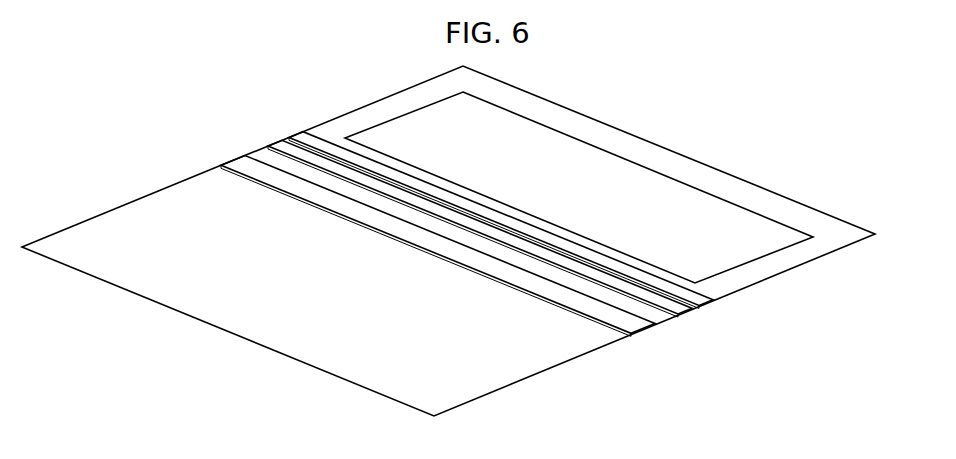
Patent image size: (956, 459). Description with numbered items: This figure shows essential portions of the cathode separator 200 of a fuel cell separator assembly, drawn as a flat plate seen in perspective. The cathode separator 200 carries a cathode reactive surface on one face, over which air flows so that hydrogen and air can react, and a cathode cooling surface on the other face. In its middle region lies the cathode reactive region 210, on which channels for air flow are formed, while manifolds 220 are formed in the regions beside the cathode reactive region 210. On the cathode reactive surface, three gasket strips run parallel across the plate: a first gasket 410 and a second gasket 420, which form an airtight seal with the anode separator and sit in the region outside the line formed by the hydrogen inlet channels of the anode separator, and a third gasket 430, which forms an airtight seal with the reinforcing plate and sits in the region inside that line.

The cathode separator 200 is at (151, 166).
The cathode reactive region 210 is at (255, 317).
The manifolds 220 is at (703, 190).
The first gasket 410 is at (710, 301).
The second gasket 420 is at (680, 308).
The third gasket 430 is at (633, 324).